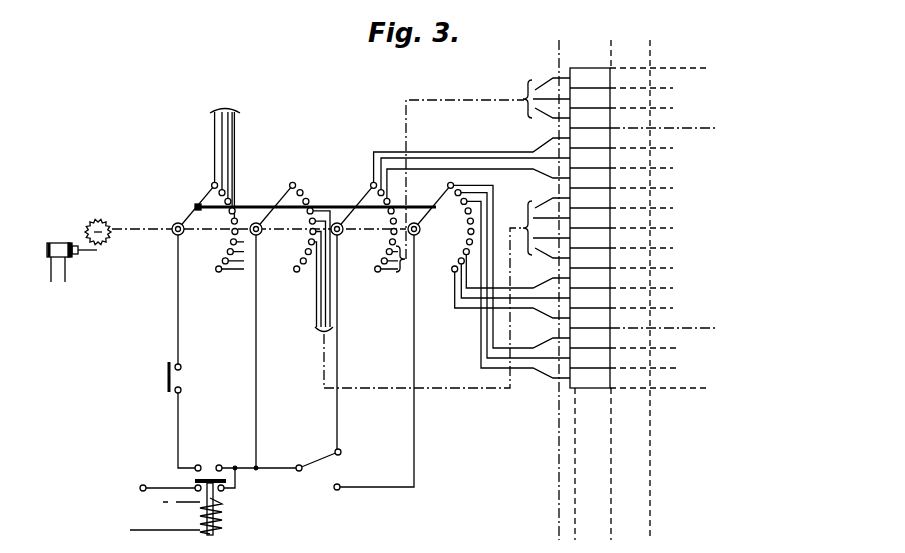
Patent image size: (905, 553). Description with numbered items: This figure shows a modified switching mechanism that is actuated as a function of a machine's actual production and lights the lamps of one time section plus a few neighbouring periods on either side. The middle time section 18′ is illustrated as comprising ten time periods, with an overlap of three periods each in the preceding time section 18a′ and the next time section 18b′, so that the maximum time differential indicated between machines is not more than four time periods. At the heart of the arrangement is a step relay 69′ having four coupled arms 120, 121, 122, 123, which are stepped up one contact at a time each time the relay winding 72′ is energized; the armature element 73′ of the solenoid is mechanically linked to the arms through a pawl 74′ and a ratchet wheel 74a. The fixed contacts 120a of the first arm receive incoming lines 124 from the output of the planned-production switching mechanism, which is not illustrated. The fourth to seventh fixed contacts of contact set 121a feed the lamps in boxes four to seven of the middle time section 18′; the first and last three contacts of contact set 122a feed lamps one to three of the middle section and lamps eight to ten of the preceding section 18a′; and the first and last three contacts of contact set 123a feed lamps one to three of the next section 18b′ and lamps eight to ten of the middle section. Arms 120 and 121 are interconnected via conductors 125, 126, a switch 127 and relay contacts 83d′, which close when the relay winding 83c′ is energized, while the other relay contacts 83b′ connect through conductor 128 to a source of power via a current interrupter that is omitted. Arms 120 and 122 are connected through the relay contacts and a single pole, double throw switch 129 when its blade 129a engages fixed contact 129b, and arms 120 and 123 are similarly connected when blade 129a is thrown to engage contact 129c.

The middle time section 18′ is at (688, 213).
The preceding time section 18a′ is at (684, 99).
The next time section 18b′ is at (688, 353).
The relay winding 72′ is at (58, 243).
The armature element 73′ is at (76, 254).
The pawl 74′ is at (100, 250).
The ratchet wheel 74a is at (95, 221).
The step relay 69′ is at (292, 179).
The incoming lines 124 is at (225, 153).
The switch arm 120 is at (193, 209).
The fixed contacts 120a is at (227, 243).
The switch arm 121 is at (279, 207).
The contact set 121a is at (300, 244).
The switch arm 122 is at (357, 205).
The contact set 122a is at (386, 238).
The switch arm 123 is at (439, 204).
The contact set 123a is at (465, 244).
The conductor 125 is at (256, 338).
The conductor 126 is at (178, 331).
The switch 127 is at (168, 374).
The conductor 128 is at (160, 487).
The relay contacts 83d′ is at (219, 465).
The relay contacts 83b′ is at (236, 489).
The relay winding 83c′ is at (225, 511).
The single pole, double throw switch 129 is at (344, 467).
The blade 129a is at (315, 462).
The fixed contact 129b is at (341, 449).
The contact 129c is at (339, 490).